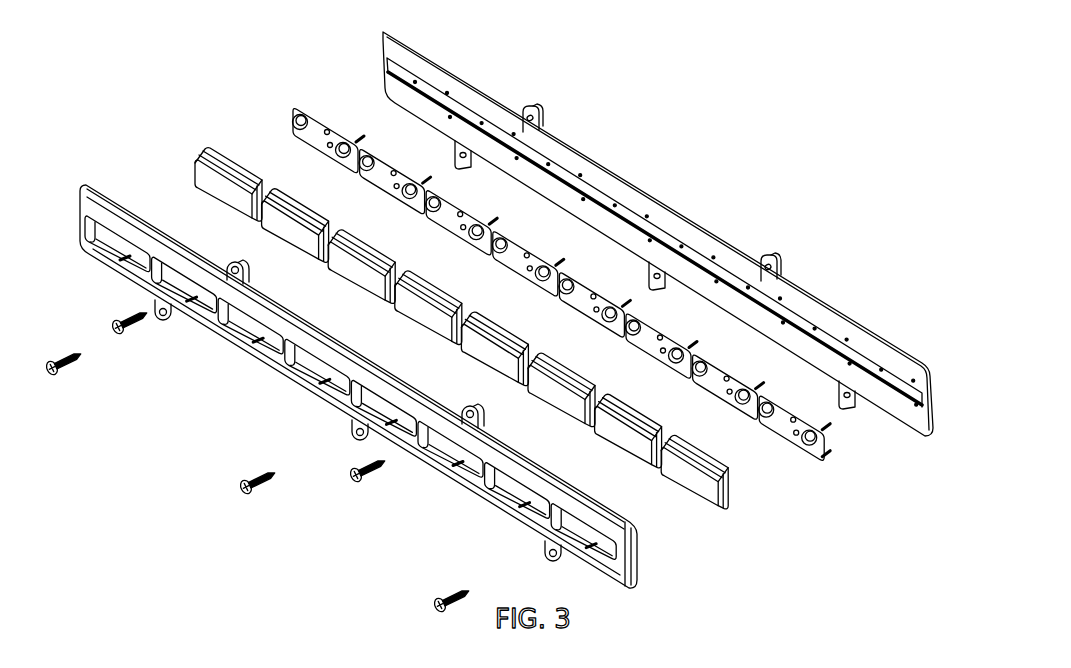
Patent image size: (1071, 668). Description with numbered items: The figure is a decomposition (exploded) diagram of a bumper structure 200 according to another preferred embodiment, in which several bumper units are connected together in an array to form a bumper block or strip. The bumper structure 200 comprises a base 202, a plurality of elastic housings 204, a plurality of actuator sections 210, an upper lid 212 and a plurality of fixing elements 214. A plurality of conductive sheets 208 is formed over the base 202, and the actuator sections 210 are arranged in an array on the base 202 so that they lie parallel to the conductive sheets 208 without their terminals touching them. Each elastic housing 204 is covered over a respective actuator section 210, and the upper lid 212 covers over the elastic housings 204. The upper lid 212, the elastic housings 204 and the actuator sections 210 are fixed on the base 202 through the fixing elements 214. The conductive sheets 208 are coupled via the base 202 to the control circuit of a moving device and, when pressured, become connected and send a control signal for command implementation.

The bumper structure 200 is at (776, 499).
The base 202 is at (630, 193).
The elastic housings 204 is at (195, 158).
The conductive sheets 208 is at (678, 240).
The actuator sections 210 is at (326, 130).
The upper lid 212 is at (453, 478).
The fixing elements 214 is at (343, 483).